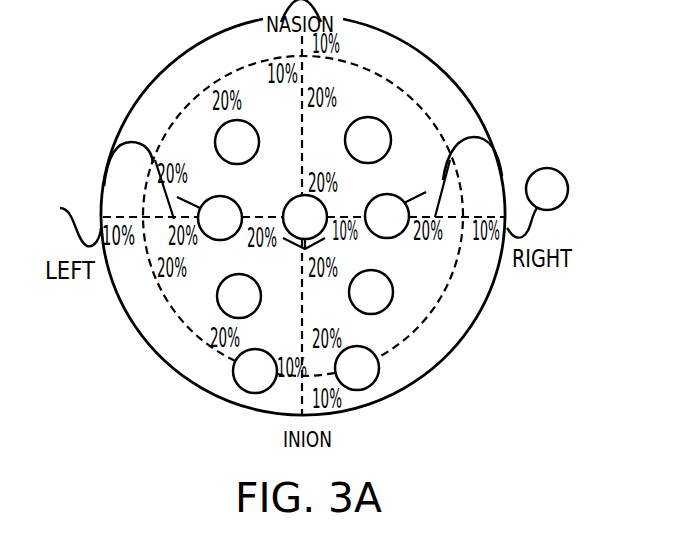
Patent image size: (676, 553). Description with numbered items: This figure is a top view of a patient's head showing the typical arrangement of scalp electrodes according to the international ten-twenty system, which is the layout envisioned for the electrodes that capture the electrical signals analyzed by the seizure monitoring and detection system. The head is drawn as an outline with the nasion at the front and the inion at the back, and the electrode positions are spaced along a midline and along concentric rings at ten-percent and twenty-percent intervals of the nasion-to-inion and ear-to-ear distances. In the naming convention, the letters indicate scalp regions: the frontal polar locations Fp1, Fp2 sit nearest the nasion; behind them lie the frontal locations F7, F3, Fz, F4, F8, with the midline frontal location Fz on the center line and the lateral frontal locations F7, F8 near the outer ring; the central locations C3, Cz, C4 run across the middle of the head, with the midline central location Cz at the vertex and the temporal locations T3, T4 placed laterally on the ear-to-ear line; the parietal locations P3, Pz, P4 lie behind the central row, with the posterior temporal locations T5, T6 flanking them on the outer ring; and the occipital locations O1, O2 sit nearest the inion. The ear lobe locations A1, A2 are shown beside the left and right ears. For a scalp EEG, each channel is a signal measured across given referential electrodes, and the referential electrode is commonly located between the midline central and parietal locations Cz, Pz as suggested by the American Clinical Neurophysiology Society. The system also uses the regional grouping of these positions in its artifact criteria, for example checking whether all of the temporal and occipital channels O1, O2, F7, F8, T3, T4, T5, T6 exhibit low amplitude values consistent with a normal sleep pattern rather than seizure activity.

The frontal polar electrode location Fp1 is at (251, 73).
The frontal polar electrode location Fp2 is at (373, 70).
The frontal electrode location F7 is at (174, 133).
The frontal electrode location F3 is at (237, 142).
The midline frontal electrode location Fz is at (304, 143).
The frontal electrode location F4 is at (368, 140).
The frontal electrode location F8 is at (432, 130).
The ear lobe electrode location A1 is at (69, 215).
The temporal electrode location T3 is at (143, 217).
The central electrode location C3 is at (220, 218).
The midline central electrode location Cz is at (305, 217).
The central electrode location C4 is at (387, 216).
The temporal electrode location T4 is at (461, 213).
The ear lobe electrode location A2 is at (537, 203).
The temporal electrode location T5 is at (178, 315).
The parietal electrode location P3 is at (239, 296).
The midline parietal electrode location Pz is at (307, 298).
The parietal electrode location P4 is at (371, 292).
The temporal electrode location T6 is at (431, 313).
The occipital electrode location O1 is at (255, 371).
The occipital electrode location O2 is at (357, 368).